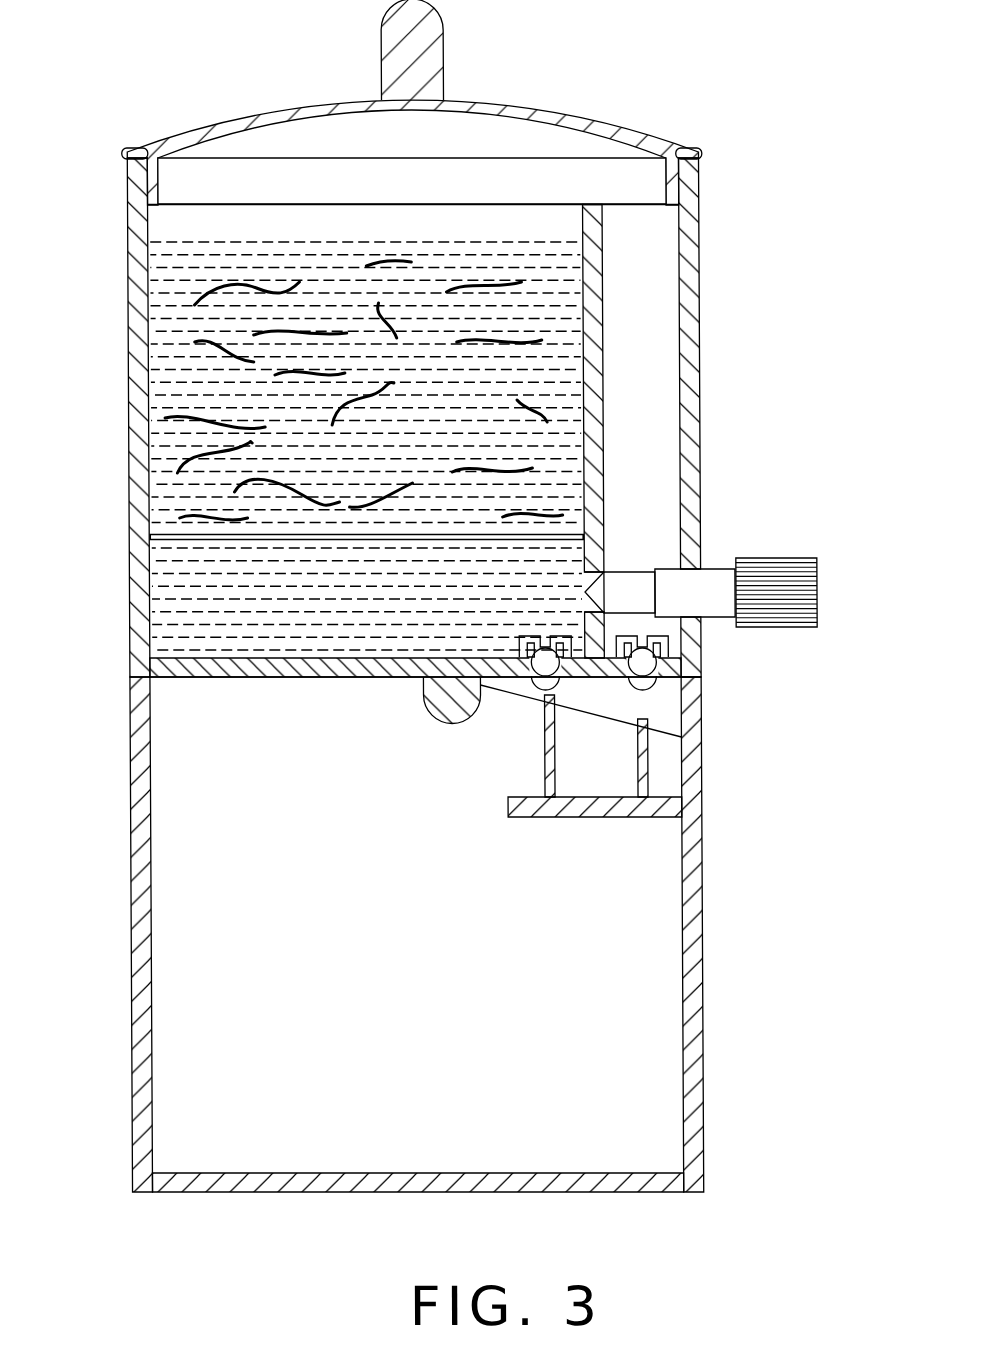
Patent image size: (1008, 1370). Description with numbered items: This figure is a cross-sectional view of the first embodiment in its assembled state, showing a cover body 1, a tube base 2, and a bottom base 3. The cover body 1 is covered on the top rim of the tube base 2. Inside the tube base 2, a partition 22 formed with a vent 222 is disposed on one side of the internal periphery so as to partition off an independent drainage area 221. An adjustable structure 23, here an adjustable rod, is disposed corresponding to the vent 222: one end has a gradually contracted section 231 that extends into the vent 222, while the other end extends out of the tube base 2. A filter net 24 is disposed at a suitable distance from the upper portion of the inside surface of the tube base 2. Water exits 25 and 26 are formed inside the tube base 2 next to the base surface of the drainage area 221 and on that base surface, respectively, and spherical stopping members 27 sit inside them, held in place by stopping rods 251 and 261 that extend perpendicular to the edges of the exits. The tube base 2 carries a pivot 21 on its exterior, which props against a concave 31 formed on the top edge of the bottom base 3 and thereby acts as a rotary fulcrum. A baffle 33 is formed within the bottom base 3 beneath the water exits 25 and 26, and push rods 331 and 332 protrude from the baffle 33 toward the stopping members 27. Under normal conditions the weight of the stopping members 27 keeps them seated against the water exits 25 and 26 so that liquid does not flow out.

The cover body 1 is at (619, 135).
The tube base 2 is at (464, 467).
The pivot 21 is at (423, 712).
The partition 22 is at (693, 429).
The drainage area 221 is at (640, 318).
The vent 222 is at (595, 576).
The adjustable structure 23 is at (807, 583).
The gradually contracted section 231 is at (597, 596).
The filter net 24 is at (148, 536).
The water exit 25 is at (476, 712).
The stopping rod 251 is at (518, 668).
The water exit 26 is at (640, 663).
The stopping rod 261 is at (668, 646).
The stopping member 27 is at (555, 673).
The bottom base 3 is at (422, 934).
The concave 31 is at (419, 685).
The baffle 33 is at (641, 838).
The push rod 331 is at (648, 765).
The push rod 332 is at (590, 817).